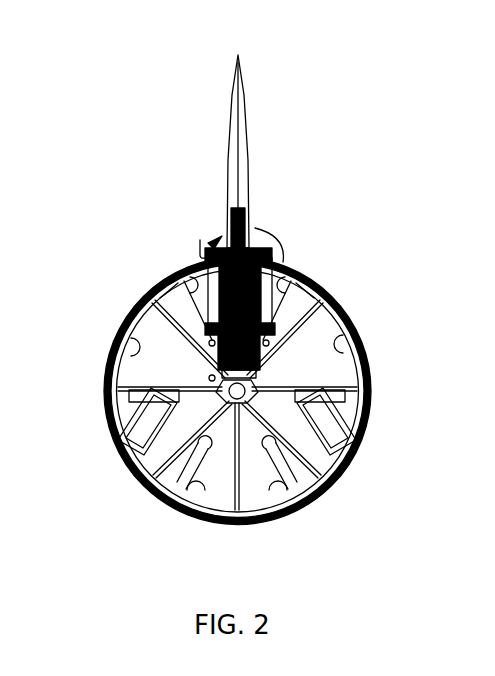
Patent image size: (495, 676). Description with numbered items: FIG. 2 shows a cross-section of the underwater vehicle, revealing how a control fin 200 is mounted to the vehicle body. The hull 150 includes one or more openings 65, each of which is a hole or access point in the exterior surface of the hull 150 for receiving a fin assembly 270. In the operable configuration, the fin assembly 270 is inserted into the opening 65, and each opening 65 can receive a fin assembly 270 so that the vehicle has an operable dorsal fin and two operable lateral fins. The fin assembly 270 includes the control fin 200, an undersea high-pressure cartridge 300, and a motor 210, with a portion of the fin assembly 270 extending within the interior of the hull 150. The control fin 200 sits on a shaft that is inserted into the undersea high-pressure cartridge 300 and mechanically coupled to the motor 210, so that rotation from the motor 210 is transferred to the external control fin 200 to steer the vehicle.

The fin assembly 270 is at (351, 97).
The control fin 200 is at (252, 166).
The undersea high-pressure cartridge 300 is at (196, 258).
The hull 150 is at (146, 284).
The opening 65 is at (305, 284).
The motor 210 is at (268, 366).